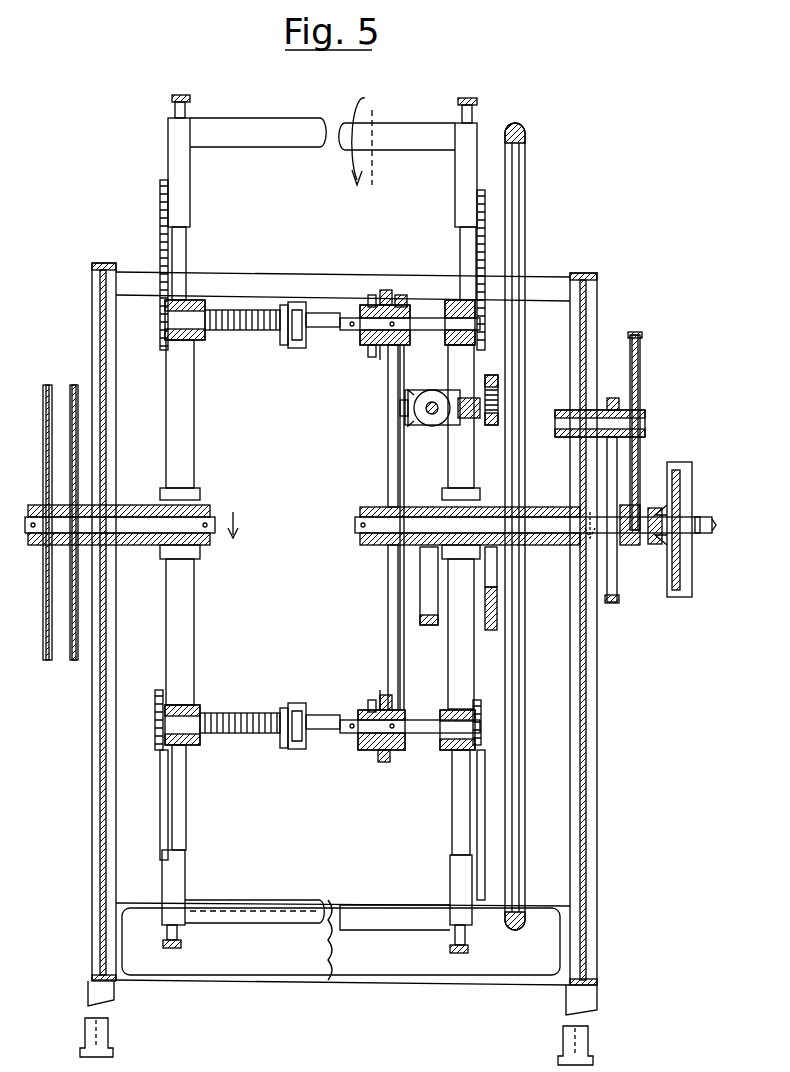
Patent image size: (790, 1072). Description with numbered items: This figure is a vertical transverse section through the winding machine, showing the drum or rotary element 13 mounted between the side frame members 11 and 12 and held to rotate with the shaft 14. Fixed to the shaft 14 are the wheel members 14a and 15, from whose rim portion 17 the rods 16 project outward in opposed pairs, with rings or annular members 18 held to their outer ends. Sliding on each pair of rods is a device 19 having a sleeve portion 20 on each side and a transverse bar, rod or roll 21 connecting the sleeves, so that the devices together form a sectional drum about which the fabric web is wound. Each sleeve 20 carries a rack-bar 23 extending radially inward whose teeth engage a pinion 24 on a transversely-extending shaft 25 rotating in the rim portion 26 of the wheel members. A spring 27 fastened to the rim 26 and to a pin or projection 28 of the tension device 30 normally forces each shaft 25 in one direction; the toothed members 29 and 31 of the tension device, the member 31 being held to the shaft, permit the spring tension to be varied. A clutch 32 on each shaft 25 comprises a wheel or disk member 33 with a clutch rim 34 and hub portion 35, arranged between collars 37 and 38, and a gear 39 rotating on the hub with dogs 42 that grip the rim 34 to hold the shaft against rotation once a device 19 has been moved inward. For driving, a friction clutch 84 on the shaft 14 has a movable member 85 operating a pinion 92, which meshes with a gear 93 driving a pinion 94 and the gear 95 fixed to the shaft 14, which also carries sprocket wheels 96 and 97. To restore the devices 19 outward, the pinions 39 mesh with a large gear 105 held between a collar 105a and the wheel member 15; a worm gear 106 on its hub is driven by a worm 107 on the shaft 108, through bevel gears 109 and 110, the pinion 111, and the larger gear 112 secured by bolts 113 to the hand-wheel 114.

The side frame member 11 is at (597, 790).
The side frame member 12 is at (92, 800).
The drum or rotary element 13 is at (343, 556).
The shaft 14 is at (215, 533).
The wheel member 14a is at (190, 420).
The wheel member 15 is at (452, 378).
The rods 16 is at (462, 262).
The rim portion 17 is at (195, 312).
The rings or annular members 18 is at (181, 95).
The device 19 is at (327, 539).
The sleeve portion 20 is at (191, 170).
The bar, rod or roll 21 is at (270, 130).
The rack-bar 23 is at (160, 240).
The pinion 24 is at (165, 320).
The transversely-extending shaft 25 is at (345, 316).
The rim portion 26 is at (195, 345).
The spring 27 is at (250, 310).
The pin or projection 28 is at (282, 303).
The tension device member 29 is at (284, 345).
The tension device 30 is at (297, 525).
The normally fixed member 31 is at (320, 330).
The clutch 32 is at (378, 493).
The wheel or disk member 33 is at (370, 295).
The clutch rim 34 is at (370, 700).
The hub portion 35 is at (375, 745).
The collar 37 is at (455, 310).
The collar 38 is at (365, 335).
The gear 39 is at (410, 298).
The dog 42 is at (380, 352).
The friction clutch 84 is at (685, 542).
The movable clutch member 85 is at (655, 580).
The pinion 92 is at (626, 545).
The gear 93 is at (640, 345).
The pinion 94 is at (612, 398).
The gear 95 is at (612, 605).
The sprocket wheel 96 is at (74, 660).
The sprocket wheel 97 is at (47, 660).
The large gear 105 is at (390, 595).
The collar 105a is at (360, 530).
The worm gear 106 is at (430, 625).
The worm 107 is at (398, 345).
The shaft 108 is at (445, 420).
The bevel gear 109 is at (422, 420).
The bevel gear 110 is at (418, 415).
The pinion or gear 111 is at (498, 385).
The gear 112 is at (497, 625).
The bolts 113 is at (497, 588).
The hand-wheel 114 is at (520, 230).